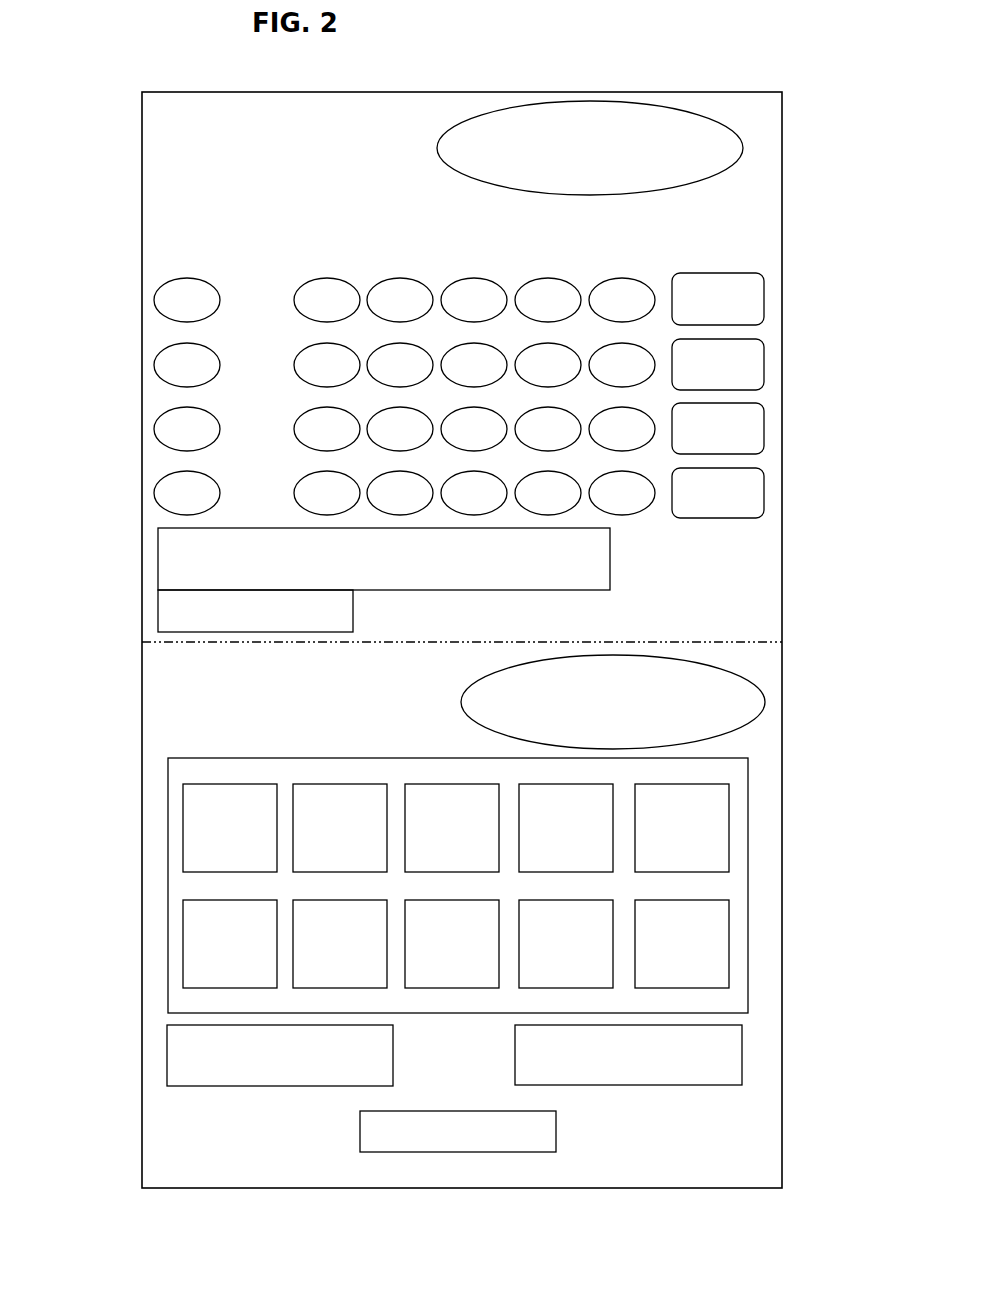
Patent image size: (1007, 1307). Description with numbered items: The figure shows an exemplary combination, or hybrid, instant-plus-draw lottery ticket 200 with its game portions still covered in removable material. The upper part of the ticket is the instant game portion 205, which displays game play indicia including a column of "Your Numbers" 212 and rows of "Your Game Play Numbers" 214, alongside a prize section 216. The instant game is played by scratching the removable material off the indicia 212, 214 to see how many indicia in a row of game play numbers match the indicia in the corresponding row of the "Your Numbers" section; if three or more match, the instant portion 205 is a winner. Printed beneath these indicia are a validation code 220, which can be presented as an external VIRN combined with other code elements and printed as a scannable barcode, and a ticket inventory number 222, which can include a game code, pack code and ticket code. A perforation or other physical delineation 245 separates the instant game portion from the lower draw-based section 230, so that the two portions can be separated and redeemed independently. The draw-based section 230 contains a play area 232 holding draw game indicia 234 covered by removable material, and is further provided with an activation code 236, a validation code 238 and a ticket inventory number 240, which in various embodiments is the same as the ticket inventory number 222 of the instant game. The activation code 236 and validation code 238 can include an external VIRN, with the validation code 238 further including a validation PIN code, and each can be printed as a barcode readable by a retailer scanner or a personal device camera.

The instant-plus-draw lottery ticket 200 is at (773, 125).
The instant game portion 205 is at (652, 112).
The Your Numbers indicia 212 is at (151, 288).
The Your Game Play Numbers indicia 214 is at (389, 312).
The prize section 216 is at (775, 310).
The validation code 220 is at (157, 550).
The ticket inventory number 222 is at (157, 608).
The perforation 245 is at (141, 641).
The draw-based section 230 is at (760, 673).
The play area 232 is at (172, 764).
The draw game indicia 234 is at (190, 822).
The activation code 236 is at (740, 1027).
The validation code 238 is at (178, 1028).
The ticket inventory number 240 is at (560, 1128).